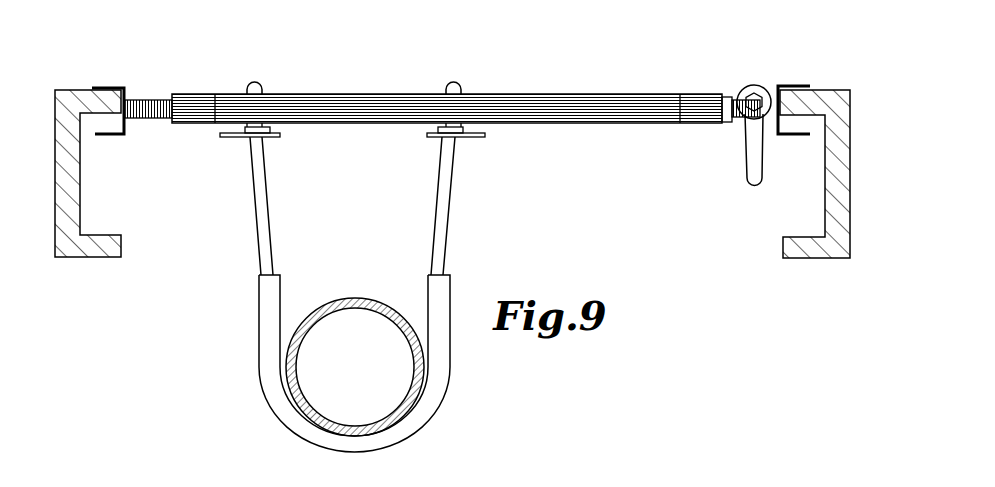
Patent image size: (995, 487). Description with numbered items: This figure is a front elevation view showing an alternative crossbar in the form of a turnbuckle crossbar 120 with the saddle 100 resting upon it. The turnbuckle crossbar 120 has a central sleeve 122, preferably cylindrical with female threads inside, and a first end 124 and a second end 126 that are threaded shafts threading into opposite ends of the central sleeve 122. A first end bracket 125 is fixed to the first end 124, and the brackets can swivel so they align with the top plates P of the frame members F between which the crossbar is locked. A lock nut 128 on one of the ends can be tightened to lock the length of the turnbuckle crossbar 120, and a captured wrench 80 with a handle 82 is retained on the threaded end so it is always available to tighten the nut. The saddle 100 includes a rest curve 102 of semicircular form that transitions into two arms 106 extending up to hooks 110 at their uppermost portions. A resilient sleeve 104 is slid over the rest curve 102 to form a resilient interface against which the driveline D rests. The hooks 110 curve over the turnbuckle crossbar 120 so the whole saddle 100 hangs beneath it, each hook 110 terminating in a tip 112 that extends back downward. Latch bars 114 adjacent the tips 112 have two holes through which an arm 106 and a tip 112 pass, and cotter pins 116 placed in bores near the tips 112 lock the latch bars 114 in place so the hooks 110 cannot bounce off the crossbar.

The saddle 100 is at (454, 241).
The rest curve 102 is at (354, 241).
The resilient sleeve 104 is at (273, 375).
The arm 106 is at (266, 242).
The hook 110 is at (243, 70).
The tip 112 is at (262, 140).
The latch bar 114 is at (240, 130).
The cotter pin 116 is at (238, 138).
The turnbuckle crossbar 120 is at (454, 94).
The central sleeve 122 is at (369, 95).
The first end 124 is at (147, 100).
The first end bracket 125 is at (107, 96).
The second end 126 is at (742, 92).
The lock nut 128 is at (793, 88).
The captured wrench 80 is at (730, 172).
The handle 82 is at (750, 175).
The top plate P is at (77, 98).
The frame member F is at (80, 187).
The driveline D is at (355, 297).